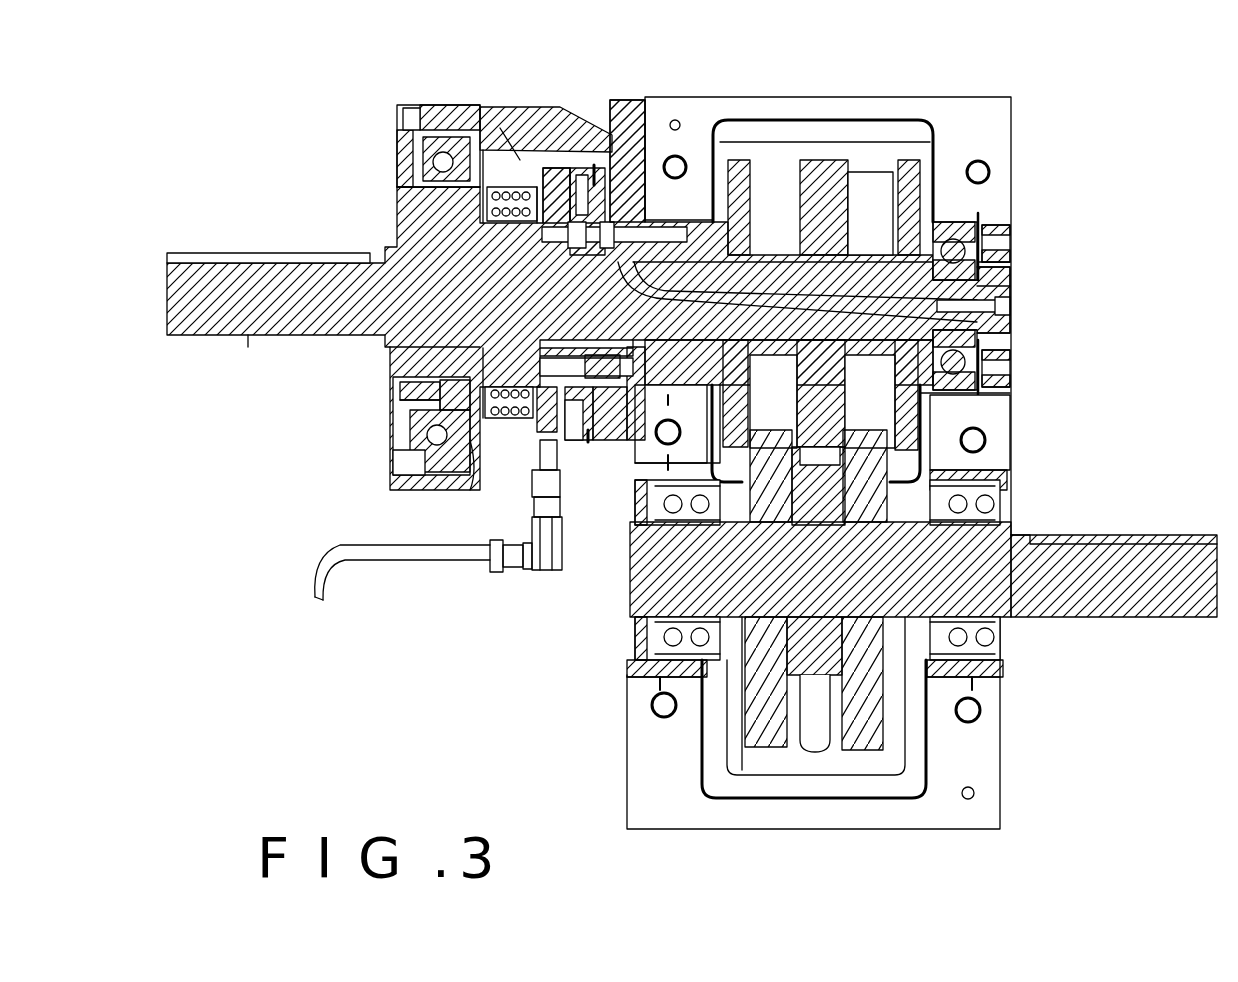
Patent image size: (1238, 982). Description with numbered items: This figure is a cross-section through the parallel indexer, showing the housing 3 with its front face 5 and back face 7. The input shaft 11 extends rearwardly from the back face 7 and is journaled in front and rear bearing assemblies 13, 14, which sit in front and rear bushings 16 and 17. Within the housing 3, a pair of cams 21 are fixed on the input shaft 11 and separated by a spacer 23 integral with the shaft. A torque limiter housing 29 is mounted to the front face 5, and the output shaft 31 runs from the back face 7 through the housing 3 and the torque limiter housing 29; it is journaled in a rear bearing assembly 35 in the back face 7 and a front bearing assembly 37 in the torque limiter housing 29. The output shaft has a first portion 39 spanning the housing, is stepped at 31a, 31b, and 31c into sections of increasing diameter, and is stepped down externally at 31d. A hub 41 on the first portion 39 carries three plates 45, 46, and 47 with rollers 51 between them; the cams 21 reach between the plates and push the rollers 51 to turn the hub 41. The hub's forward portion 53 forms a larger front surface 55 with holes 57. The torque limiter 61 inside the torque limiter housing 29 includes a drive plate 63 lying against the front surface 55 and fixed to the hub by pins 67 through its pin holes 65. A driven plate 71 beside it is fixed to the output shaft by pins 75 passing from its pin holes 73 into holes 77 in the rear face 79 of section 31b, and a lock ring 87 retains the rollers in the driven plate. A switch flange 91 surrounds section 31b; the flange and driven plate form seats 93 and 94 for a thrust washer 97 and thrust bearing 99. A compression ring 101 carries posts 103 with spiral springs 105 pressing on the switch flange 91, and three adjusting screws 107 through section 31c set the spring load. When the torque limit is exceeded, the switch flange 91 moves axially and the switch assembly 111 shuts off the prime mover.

The housing 3 is at (995, 97).
The front face 5 is at (627, 765).
The back face 7 is at (1000, 758).
The input shaft 11 is at (1140, 535).
The front bearing assembly 13 is at (640, 640).
The rear bearing assembly 14 is at (985, 650).
The front bushing 16 is at (635, 678).
The rear bushing 17 is at (990, 668).
The cams 21 is at (762, 750).
The spacer 23 is at (815, 754).
The torque limiter housing 29 is at (500, 126).
The output shaft 31 is at (248, 258).
The output shaft section 31a is at (1010, 330).
The output shaft section 31b is at (408, 112).
The output shaft section 31c is at (420, 150).
The stepped-down portion 31d is at (248, 347).
The rear bearing assembly 35 is at (975, 238).
The front bearing assembly 37 is at (400, 172).
The first portion 39 is at (770, 272).
The hub 41 is at (820, 158).
The plate 45 is at (905, 175).
The plate 46 is at (855, 180).
The plate 47 is at (742, 170).
The rollers 51 is at (870, 190).
The forward portion 53 is at (716, 220).
The front surface 55 is at (1010, 308).
The holes 57 is at (1012, 289).
The clutch housing wall 61 is at (520, 138).
The drive plate 63 is at (628, 165).
The pin holes 65 is at (602, 228).
The pins 67 is at (690, 170).
The driven plate 71 is at (585, 200).
The pin holes 73 is at (586, 442).
The pins 75 is at (400, 386).
The holes 77 is at (400, 349).
The rear face 79 is at (552, 165).
The lock ring 87 is at (612, 445).
The switch flange 91 is at (545, 425).
The seat 93 is at (500, 560).
The seat 94 is at (548, 572).
The thrust washer 97 is at (522, 178).
The thrust bearing 99 is at (560, 200).
The compression ring 101 is at (396, 464).
The posts 103 is at (470, 455).
The spiral springs 105 is at (525, 410).
The adjusting screws 107 is at (410, 402).
The switch assembly 111 is at (540, 545).